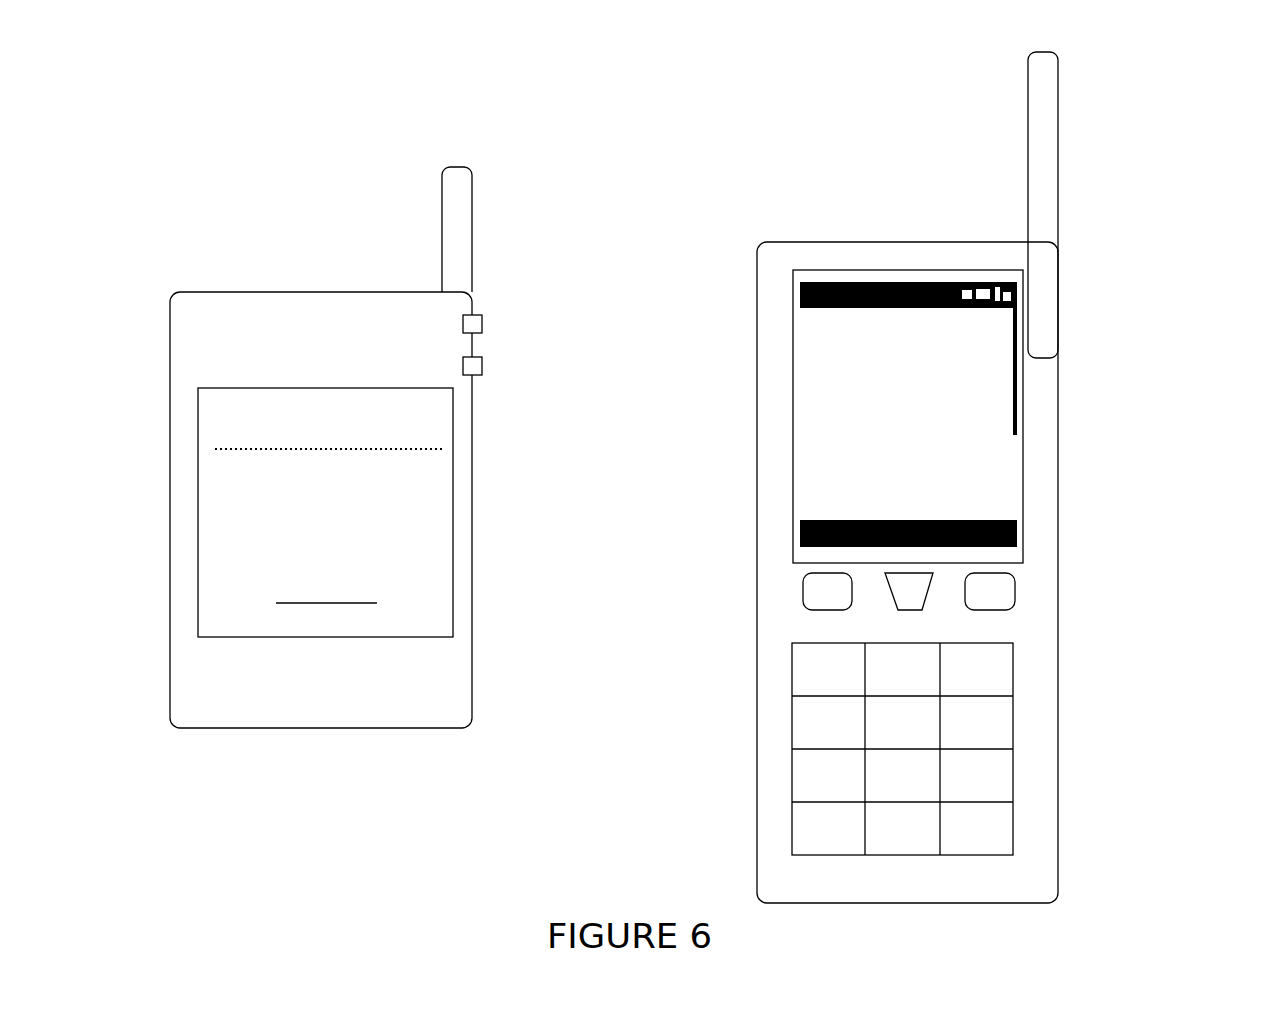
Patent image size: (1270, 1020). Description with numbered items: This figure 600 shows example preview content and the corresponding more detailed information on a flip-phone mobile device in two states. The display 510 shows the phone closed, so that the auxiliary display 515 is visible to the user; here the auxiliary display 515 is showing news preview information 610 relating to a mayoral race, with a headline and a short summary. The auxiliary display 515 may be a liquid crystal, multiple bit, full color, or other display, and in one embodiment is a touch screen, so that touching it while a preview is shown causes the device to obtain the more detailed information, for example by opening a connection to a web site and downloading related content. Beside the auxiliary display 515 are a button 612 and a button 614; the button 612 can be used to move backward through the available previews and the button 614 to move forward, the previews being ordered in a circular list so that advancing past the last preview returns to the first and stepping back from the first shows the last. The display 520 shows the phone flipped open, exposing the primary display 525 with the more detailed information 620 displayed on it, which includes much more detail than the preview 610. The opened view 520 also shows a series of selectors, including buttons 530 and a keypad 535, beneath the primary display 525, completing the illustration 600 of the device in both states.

The system showing mobile device displays 600 is at (1169, 93).
The display 510 is at (304, 251).
The auxiliary display 515 is at (464, 515).
The news preview information 610 is at (442, 428).
The button 612 is at (502, 323).
The button 614 is at (502, 368).
The display 520 is at (907, 193).
The primary display 525 is at (1042, 422).
The more detailed information 620 is at (1017, 385).
The buttons 530 is at (1042, 593).
The keypad 535 is at (1062, 728).